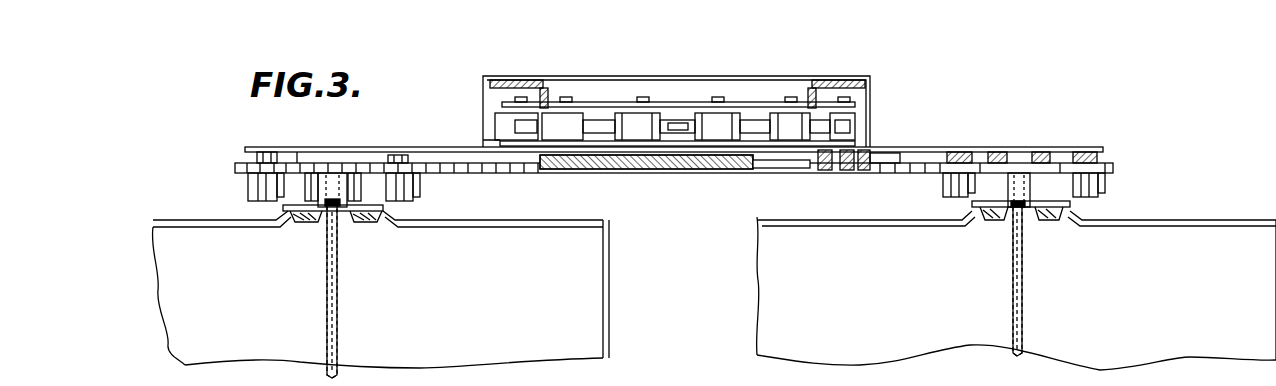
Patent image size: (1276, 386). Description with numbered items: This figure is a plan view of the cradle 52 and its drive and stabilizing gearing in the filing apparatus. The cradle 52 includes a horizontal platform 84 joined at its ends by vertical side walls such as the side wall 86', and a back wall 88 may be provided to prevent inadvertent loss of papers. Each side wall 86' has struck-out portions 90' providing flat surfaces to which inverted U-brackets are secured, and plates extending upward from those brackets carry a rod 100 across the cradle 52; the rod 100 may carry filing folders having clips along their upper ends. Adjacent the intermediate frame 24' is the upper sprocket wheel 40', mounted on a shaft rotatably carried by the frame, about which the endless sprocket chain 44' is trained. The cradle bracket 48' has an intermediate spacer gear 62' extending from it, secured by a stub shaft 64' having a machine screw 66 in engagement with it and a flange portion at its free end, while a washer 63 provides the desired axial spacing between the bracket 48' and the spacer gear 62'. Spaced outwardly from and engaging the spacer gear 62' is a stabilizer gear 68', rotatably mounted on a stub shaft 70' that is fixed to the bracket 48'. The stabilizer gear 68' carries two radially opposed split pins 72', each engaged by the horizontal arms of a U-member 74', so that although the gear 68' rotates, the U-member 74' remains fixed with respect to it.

The intermediate frame 24' is at (675, 178).
The upper sprocket wheel 40' is at (704, 108).
The endless sprocket chain 44' is at (676, 99).
The cradle bracket 48' is at (692, 135).
The cradle 52 is at (748, 322).
The intermediate spacer gear 62' is at (674, 160).
The washer 63 is at (890, 158).
The stub shaft 64' is at (843, 175).
The machine screw 66 is at (870, 170).
The stabilizer gear 68' is at (337, 141).
The stub shaft 70' is at (687, 152).
The split pin 72' is at (1049, 143).
The U-member 74' is at (676, 164).
The horizontal platform 84 is at (492, 282).
The vertical side wall 86' is at (714, 196).
The back wall 88 is at (609, 285).
The struck-out portion 90' is at (676, 227).
The rod 100 is at (337, 292).